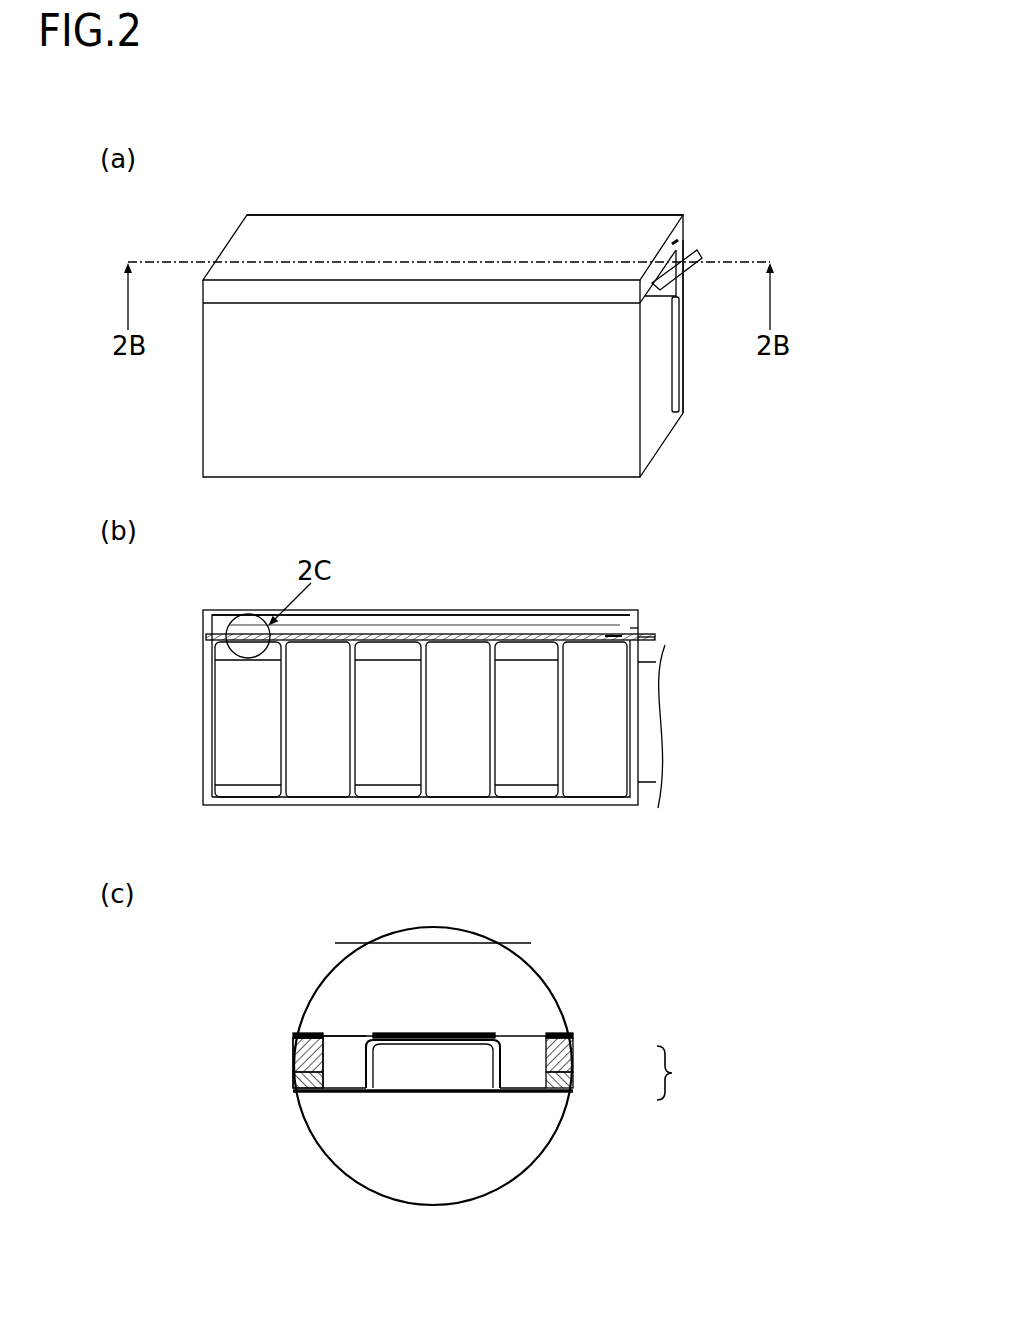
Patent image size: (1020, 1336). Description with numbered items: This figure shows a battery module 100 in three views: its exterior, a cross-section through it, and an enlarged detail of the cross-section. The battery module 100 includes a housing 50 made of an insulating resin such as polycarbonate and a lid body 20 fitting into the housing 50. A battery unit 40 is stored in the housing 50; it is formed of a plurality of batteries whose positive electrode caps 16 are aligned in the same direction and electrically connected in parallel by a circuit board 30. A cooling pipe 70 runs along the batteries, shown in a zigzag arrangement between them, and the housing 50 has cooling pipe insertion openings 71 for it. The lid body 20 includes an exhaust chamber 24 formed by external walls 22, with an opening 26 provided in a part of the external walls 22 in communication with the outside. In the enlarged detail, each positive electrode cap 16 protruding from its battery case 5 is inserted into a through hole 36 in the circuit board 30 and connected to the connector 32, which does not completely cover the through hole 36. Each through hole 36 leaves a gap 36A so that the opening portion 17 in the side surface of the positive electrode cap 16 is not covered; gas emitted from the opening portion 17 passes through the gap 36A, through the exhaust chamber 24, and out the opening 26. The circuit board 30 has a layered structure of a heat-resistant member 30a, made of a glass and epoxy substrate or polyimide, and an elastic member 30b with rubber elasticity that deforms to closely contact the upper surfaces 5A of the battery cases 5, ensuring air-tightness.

The battery module 100 is at (206, 182).
The lid body 20 is at (497, 238).
The external walls 22 is at (207, 623).
The exhaust chamber 24 is at (399, 609).
The opening 26 is at (676, 246).
The circuit board 30 is at (690, 258).
The heat-resistant member 30a is at (574, 1058).
The elastic member 30b is at (574, 1083).
The connector 32 is at (562, 636).
The through hole 36 is at (608, 636).
The gap 36A is at (350, 1052).
The battery unit 40 is at (604, 683).
The housing 50 is at (660, 389).
The cooling pipe 70 is at (230, 713).
The cooling pipe insertion opening 71 is at (680, 314).
The battery case 5 is at (516, 1150).
The upper surface of battery case 5A is at (297, 1094).
The positive electrode cap 16 is at (503, 1038).
The opening portion 17 is at (508, 1063).